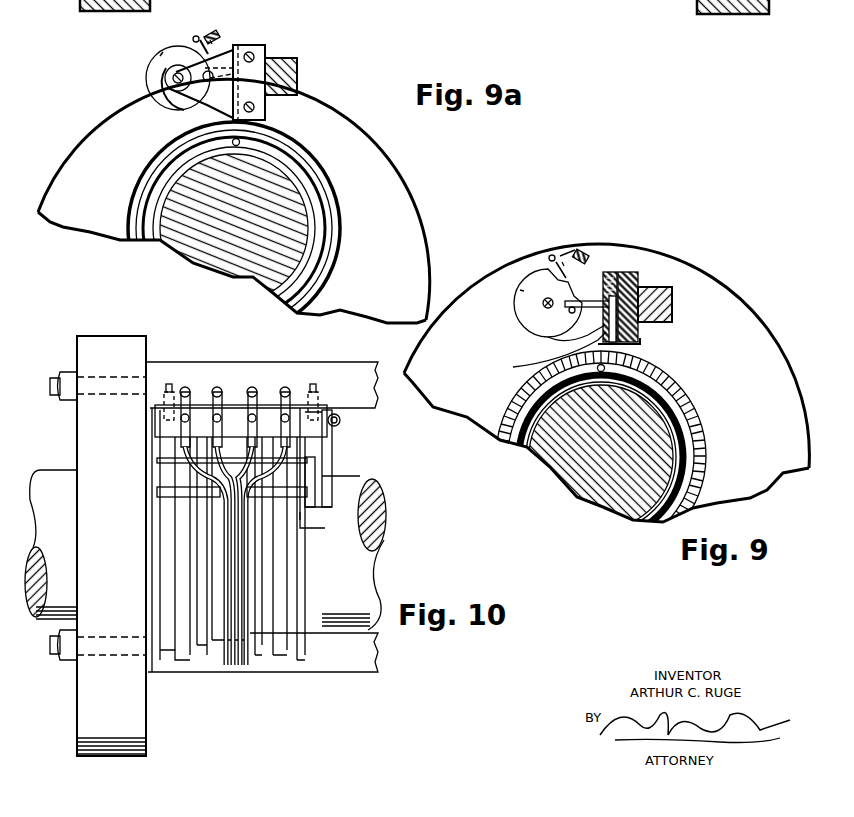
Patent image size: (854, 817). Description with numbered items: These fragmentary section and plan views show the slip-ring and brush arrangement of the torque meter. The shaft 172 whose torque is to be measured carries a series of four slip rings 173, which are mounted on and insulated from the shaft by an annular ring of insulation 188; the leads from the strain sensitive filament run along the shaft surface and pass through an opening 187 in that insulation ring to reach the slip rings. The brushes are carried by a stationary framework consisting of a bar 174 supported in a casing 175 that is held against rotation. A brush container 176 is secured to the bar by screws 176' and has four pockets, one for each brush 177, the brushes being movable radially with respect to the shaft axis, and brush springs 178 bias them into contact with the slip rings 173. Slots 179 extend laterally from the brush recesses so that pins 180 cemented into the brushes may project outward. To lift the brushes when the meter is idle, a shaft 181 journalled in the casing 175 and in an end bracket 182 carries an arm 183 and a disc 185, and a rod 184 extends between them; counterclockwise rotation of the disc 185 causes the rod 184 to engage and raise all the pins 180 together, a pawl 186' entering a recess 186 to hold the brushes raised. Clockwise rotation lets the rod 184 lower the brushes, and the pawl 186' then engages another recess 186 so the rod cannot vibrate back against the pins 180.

In FIG. 9A, the shaft 172 is at (285, 245).
In FIG. 9, the shaft 172 is at (650, 448).
In FIG. 10, the shaft 172 is at (62, 485).
In FIG. 9A, the slip rings 173 is at (325, 188).
In FIG. 9, the slip rings 173 is at (668, 384).
In FIG. 10, the slip rings 173 is at (250, 598).
In FIG. 9A, the bar 174 is at (296, 62).
In FIG. 9, the bar 174 is at (660, 290).
In FIG. 10, the bar 174 is at (348, 660).
In FIG. 9A, the casing 175 is at (415, 200).
In FIG. 9, the casing 175 is at (735, 320).
In FIG. 10, the casing 175 is at (104, 348).
In FIG. 9A, the brush container 176 is at (262, 61).
In FIG. 9, the brush container 176 is at (641, 300).
In FIG. 10, the brush container 176 is at (362, 423).
In FIG. 10, the screws 176' is at (266, 375).
In FIG. 9, the brush 177 is at (640, 340).
In FIG. 9, the brush springs 178 is at (624, 272).
In FIG. 9, the slots 179 is at (555, 354).
In FIG. 9A, the pins 180 is at (232, 45).
In FIG. 9, the pins 180 is at (565, 343).
In FIG. 9A, the shaft 181 is at (170, 77).
In FIG. 9, the shaft 181 is at (543, 303).
In FIG. 10, the shaft 181 is at (296, 505).
In FIG. 9A, the end bracket 182 is at (205, 110).
In FIG. 10, the end bracket 182 is at (318, 470).
In FIG. 9A, the arm 183 is at (165, 90).
In FIG. 10, the arm 183 is at (325, 470).
In FIG. 9, the rod 184 is at (612, 270).
In FIG. 10, the rod 184 is at (172, 460).
In FIG. 9A, the disc 185 is at (150, 53).
In FIG. 9, the disc 185 is at (540, 284).
In FIG. 10, the disc 185 is at (157, 492).
In FIG. 9A, the recess 186 is at (155, 34).
In FIG. 9, the recess 186 is at (488, 279).
In FIG. 9A, the pawl 186' is at (193, 27).
In FIG. 9, the pawl 186' is at (543, 250).
In FIG. 9A, the opening 187 is at (240, 140).
In FIG. 9, the opening 187 is at (605, 368).
In FIG. 9A, the annular ring of insulation 188 is at (282, 160).
In FIG. 9, the annular ring of insulation 188 is at (668, 408).